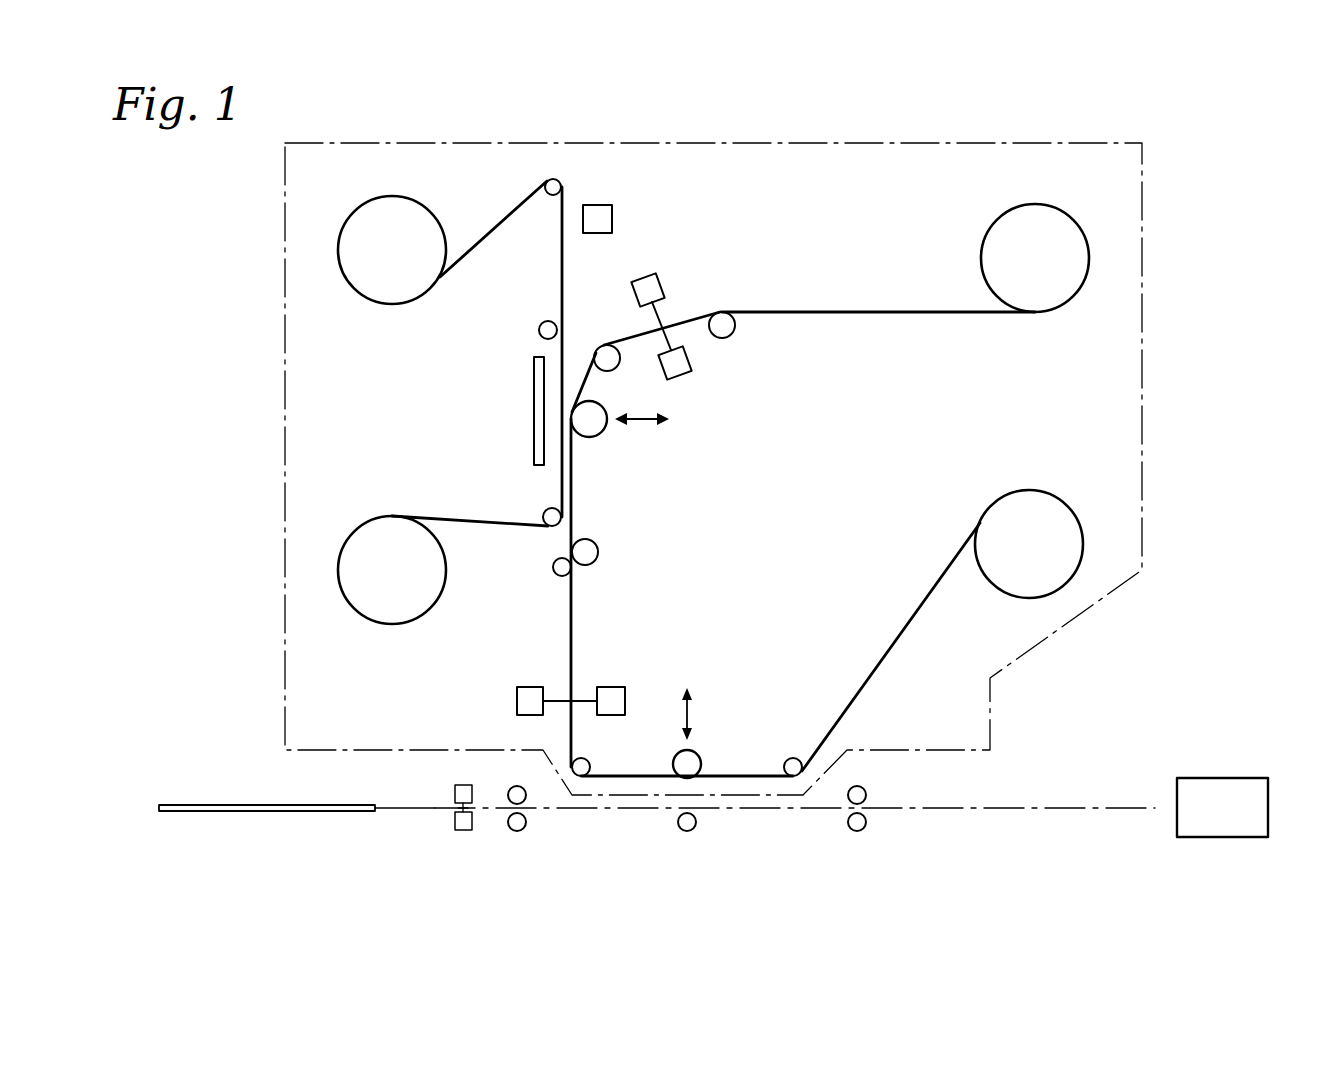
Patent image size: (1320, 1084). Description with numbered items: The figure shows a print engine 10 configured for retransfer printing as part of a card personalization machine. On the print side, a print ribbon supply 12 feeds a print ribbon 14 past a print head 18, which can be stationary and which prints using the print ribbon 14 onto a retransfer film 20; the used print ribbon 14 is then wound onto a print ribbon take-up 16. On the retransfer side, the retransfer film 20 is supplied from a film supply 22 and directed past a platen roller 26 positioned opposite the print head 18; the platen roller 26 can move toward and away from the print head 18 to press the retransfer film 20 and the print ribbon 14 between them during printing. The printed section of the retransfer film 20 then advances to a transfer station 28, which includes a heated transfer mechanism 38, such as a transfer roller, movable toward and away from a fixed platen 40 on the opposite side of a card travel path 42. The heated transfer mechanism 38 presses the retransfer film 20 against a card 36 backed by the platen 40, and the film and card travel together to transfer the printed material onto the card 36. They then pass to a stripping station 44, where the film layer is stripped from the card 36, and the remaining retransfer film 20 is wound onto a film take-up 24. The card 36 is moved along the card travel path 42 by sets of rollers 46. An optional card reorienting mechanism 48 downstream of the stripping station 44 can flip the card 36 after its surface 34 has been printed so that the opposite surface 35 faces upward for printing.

The print engine 10 is at (1142, 258).
The print ribbon supply 12 is at (380, 200).
The print ribbon 14 is at (520, 205).
The print ribbon take-up 16 is at (375, 625).
The print head 18 is at (532, 385).
The retransfer film 20 is at (878, 310).
The film supply 22 is at (1000, 215).
The film take-up 24 is at (1043, 490).
The platen roller 26 is at (604, 432).
The transfer station 28 is at (725, 703).
The surface 34 is at (207, 803).
The opposite surface 35 is at (283, 812).
The card 36 is at (240, 838).
The heated transfer mechanism 38 is at (675, 752).
The platen 40 is at (694, 830).
The card travel path 42 is at (410, 810).
The stripping station 44 is at (785, 757).
The rollers 46 is at (524, 830).
The card reorienting mechanism 48 is at (1197, 778).